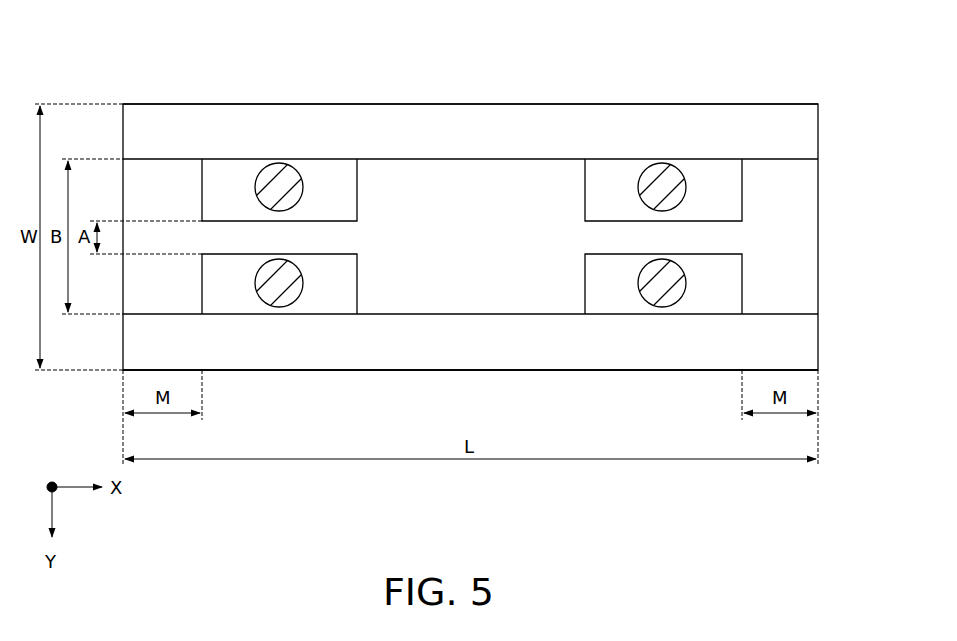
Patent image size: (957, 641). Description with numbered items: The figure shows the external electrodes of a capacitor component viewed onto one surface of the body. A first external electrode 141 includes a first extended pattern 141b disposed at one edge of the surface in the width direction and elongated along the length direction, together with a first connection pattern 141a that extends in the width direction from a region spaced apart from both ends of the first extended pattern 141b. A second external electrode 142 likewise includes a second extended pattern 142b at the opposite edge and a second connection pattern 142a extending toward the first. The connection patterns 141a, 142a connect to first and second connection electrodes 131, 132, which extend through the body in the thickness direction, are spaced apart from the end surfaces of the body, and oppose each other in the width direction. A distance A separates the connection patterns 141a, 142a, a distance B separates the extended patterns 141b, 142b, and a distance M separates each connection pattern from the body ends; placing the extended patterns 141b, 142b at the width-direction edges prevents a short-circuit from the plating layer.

The first connection electrode 131 is at (648, 170).
The second connection electrode 132 is at (648, 300).
The first external electrode 141 is at (836, 47).
The first connection pattern 141a is at (705, 177).
The first extended pattern 141b is at (802, 123).
The second external electrode 142 is at (745, 508).
The second connection pattern 142a is at (703, 298).
The second extended pattern 142b is at (722, 353).